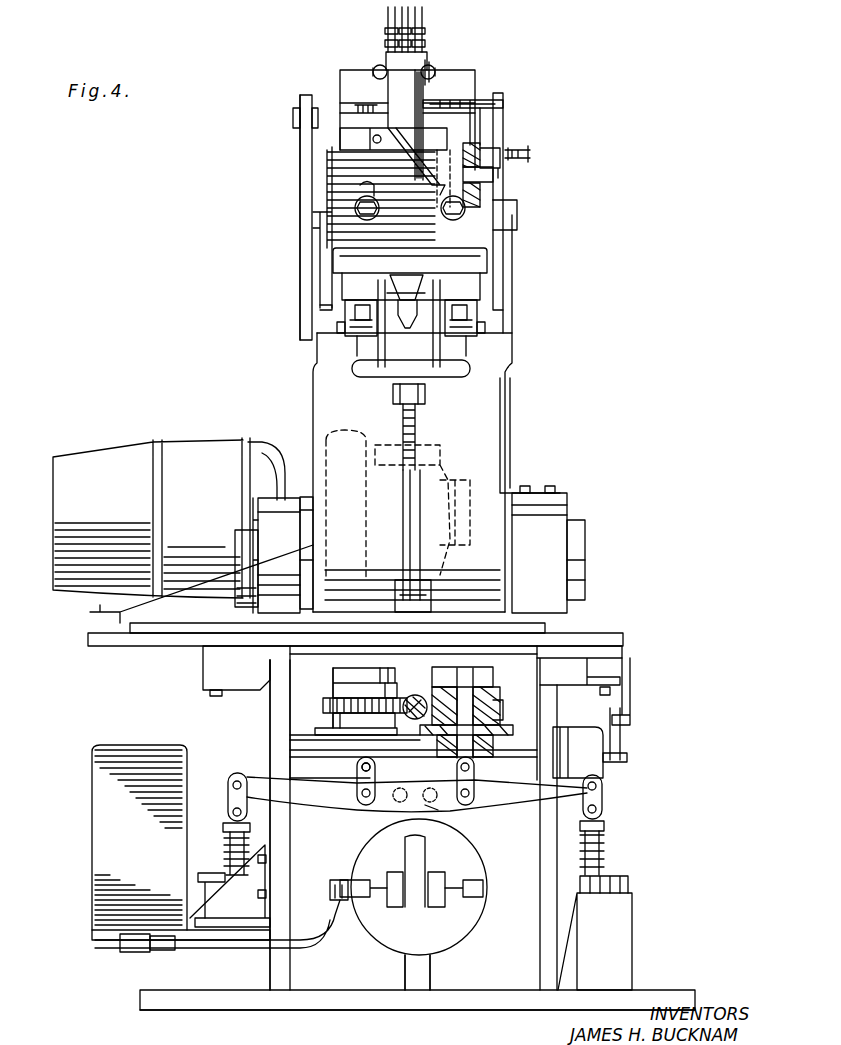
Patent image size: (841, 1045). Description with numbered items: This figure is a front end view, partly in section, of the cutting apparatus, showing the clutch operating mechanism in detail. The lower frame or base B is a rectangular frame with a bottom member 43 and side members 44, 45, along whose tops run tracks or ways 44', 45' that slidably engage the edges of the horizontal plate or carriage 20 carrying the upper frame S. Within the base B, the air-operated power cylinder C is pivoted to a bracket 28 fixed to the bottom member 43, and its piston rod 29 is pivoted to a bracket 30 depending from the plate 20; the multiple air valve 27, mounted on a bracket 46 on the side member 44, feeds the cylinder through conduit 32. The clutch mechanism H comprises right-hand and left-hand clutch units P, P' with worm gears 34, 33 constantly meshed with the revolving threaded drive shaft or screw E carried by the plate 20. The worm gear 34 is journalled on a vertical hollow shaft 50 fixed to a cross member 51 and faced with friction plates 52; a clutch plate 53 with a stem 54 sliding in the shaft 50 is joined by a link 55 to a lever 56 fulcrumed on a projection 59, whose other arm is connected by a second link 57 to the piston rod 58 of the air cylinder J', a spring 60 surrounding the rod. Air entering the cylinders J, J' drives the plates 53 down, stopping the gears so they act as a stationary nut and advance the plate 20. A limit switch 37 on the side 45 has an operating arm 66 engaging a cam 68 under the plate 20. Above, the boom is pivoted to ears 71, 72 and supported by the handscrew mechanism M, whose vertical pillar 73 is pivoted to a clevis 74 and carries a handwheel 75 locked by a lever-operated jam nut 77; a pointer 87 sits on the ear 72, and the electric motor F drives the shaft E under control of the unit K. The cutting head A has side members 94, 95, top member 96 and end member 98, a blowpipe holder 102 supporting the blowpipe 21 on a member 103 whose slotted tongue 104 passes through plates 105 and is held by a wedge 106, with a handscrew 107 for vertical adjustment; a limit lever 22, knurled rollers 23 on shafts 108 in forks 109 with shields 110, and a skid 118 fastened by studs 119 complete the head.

The oxy-acetylene cutting blowpipe 21 is at (428, 82).
The blowpipe holder 102 is at (400, 140).
The top member 96 is at (462, 82).
The side member 94 is at (340, 118).
The end member 98 is at (348, 135).
The cutting head A is at (293, 174).
The limit lever 22 is at (308, 205).
The studs 119 is at (355, 215).
The handscrew 107 is at (455, 110).
The side member 95 is at (481, 122).
The member 103 is at (480, 148).
The key or wedge 106 is at (517, 156).
The plates 105 is at (500, 168).
The slotted tongue 104 is at (493, 186).
The skid 118 is at (323, 262).
The upper frame S is at (525, 293).
The shields 110 is at (440, 360).
The forks 109 is at (352, 317).
The shafts 108 is at (337, 333).
The knurled rollers 23 is at (358, 338).
The handwheel 75 is at (469, 375).
The lever-operated jam nut 77 is at (425, 400).
The handscrew mechanism M is at (425, 426).
The motor-control unit K is at (440, 470).
The vertical pillar 73 is at (421, 516).
The clevis 74 is at (400, 600).
The pointer 87 is at (512, 428).
The ear 72 is at (568, 506).
The electric motor F is at (204, 456).
The ear 71 is at (274, 470).
The horizontal plate or carriage 20 is at (590, 630).
The stem 54 is at (463, 690).
The track or way 44' is at (246, 683).
The track or way 45' is at (579, 681).
The clutch mechanism H is at (265, 734).
The side member 44 is at (298, 825).
The side member 45 is at (526, 837).
The clutch plate 53 is at (347, 673).
The left-hand clutch unit P' is at (315, 698).
The worm gear 33 is at (328, 704).
The bracket 30 is at (406, 668).
The right-hand clutch unit P is at (477, 698).
The friction plates 52 is at (500, 706).
The worm gear 34 is at (503, 718).
The threaded drive shaft or screw E is at (417, 730).
The vertical hollow shaft 50 is at (477, 763).
The cam 68 is at (630, 682).
The operating arm 66 is at (620, 728).
The limit switch 37 is at (605, 761).
The lever 56 is at (263, 777).
The cross member 51 is at (355, 757).
The link 55 is at (357, 785).
The projection 59 is at (430, 810).
The second link 57 is at (230, 796).
The piston rod 58 is at (606, 826).
The spring 60 is at (605, 846).
The multiple air valve 27 is at (100, 831).
The bracket 46 is at (105, 936).
The air-operated cylinder J is at (229, 881).
The air-operated cylinder J' is at (605, 932).
The conduit 32 is at (222, 945).
The air-operated power cylinder C is at (470, 930).
The piston rod 29 is at (400, 905).
The bracket 28 is at (432, 970).
The bottom member 43 is at (145, 1005).
The lower frame or base B is at (403, 1019).